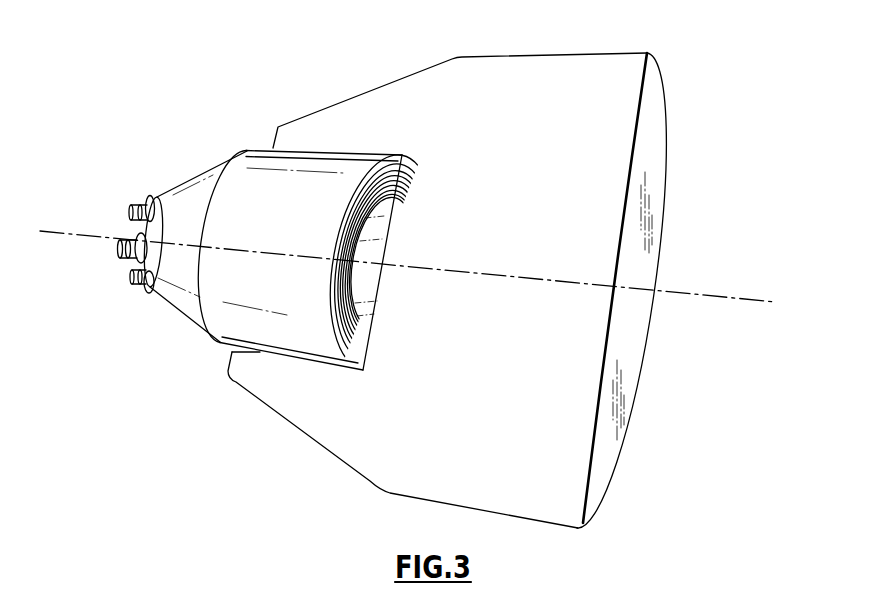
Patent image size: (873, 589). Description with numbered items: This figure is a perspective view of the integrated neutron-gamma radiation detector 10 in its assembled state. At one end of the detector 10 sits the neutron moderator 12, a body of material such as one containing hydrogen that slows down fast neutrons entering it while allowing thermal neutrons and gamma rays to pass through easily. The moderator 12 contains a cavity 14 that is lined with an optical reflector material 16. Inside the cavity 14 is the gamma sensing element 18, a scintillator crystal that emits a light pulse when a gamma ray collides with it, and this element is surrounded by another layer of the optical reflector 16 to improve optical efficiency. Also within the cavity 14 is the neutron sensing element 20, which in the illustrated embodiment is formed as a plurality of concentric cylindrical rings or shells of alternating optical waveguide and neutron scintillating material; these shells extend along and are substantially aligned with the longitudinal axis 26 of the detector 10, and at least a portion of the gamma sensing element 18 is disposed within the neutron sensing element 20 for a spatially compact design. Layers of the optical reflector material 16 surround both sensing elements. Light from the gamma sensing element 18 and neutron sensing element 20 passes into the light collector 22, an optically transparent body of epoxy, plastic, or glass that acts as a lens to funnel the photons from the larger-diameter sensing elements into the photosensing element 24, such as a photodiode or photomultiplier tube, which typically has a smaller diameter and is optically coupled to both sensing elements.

The integrated neutron-gamma radiation detector 10 is at (410, 273).
The neutron moderator 12 is at (440, 273).
The cavity 14 is at (266, 354).
The optical reflector material 16 is at (347, 151).
The gamma sensing element 18 is at (377, 228).
The neutron sensing element 20 is at (327, 224).
The light collector 22 is at (191, 194).
The photosensing element 24 is at (127, 198).
The longitudinal axis 26 is at (752, 299).